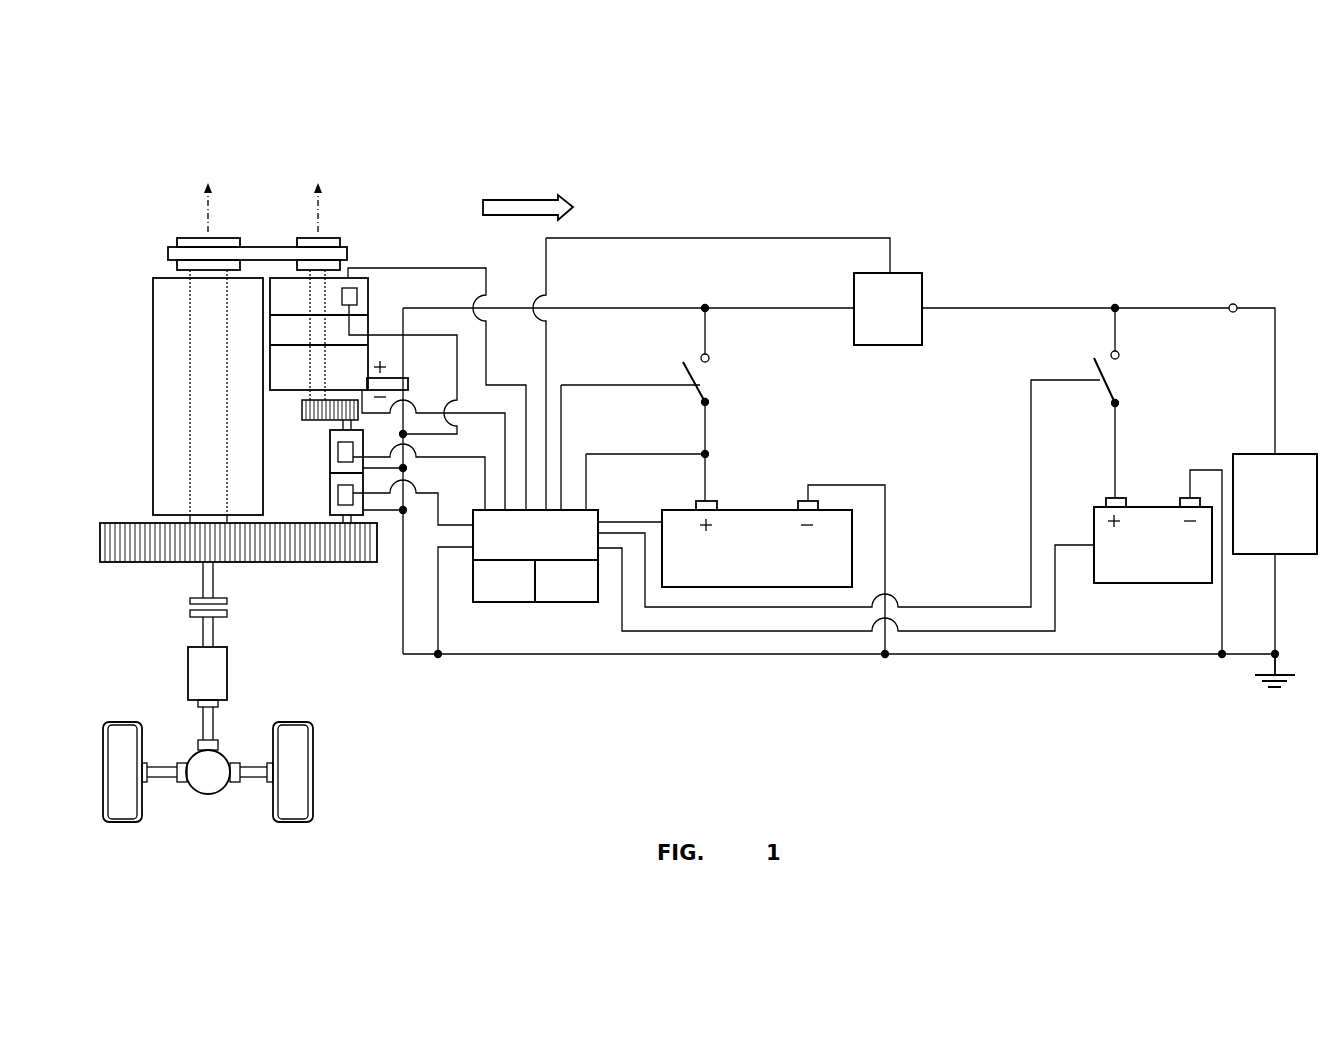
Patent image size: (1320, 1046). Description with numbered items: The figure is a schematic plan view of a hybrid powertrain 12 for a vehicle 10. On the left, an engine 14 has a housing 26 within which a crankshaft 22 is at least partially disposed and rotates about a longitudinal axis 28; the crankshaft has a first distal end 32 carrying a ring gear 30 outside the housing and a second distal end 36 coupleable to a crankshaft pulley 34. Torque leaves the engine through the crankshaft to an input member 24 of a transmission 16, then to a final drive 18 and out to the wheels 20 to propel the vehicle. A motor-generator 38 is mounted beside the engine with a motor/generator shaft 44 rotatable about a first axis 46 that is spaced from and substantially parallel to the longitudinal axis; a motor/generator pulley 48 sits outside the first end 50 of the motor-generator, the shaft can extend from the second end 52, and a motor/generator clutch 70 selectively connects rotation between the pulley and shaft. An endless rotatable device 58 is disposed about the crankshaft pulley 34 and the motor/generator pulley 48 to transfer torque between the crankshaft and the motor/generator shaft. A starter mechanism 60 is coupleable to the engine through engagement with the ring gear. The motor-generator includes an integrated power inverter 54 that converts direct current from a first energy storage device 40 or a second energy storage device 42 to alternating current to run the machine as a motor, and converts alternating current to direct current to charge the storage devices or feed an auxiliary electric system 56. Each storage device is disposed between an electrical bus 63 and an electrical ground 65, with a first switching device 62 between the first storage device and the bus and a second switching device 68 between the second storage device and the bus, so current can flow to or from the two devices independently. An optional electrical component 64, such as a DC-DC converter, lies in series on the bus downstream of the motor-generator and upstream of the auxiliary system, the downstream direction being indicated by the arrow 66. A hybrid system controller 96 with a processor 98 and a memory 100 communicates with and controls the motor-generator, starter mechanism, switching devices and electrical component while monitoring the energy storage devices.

The vehicle 10 is at (364, 703).
The powertrain 12 is at (1190, 211).
The engine 14 is at (176, 396).
The transmission 16 is at (228, 672).
The final drive 18 is at (195, 748).
The wheels 20 is at (313, 773).
The crankshaft 22 is at (188, 333).
The input member 24 is at (217, 628).
The housing 26 is at (165, 473).
The longitudinal axis 28 is at (210, 224).
The ring gear 30 is at (125, 563).
The first distal end 32 is at (190, 520).
The crankshaft pulley 34 is at (183, 236).
The second distal end 36 is at (180, 272).
The motor-generator 38 is at (389, 344).
The first energy storage device 40 is at (752, 510).
The second energy storage device 42 is at (1138, 583).
The motor/generator shaft 44 is at (318, 270).
The first axis 46 is at (315, 230).
The motor/generator pulley 48 is at (340, 266).
The first end 50 is at (288, 277).
The second end 52 is at (290, 391).
The integrated power inverter 54 is at (368, 356).
The auxiliary electric system 56 is at (1295, 453).
The endless rotatable device 58 is at (172, 252).
The starter mechanism 60 is at (328, 494).
The first switching device 62 is at (720, 382).
The electrical bus 63 is at (744, 307).
The electrical component 64 is at (928, 281).
The electrical ground 65 is at (937, 656).
The arrow 66 is at (524, 198).
The second switching device 68 is at (1124, 382).
The motor/generator clutch 70 is at (368, 287).
The hybrid system controller 96 is at (750, 483).
The processor 98 is at (504, 581).
The memory 100 is at (566, 581).